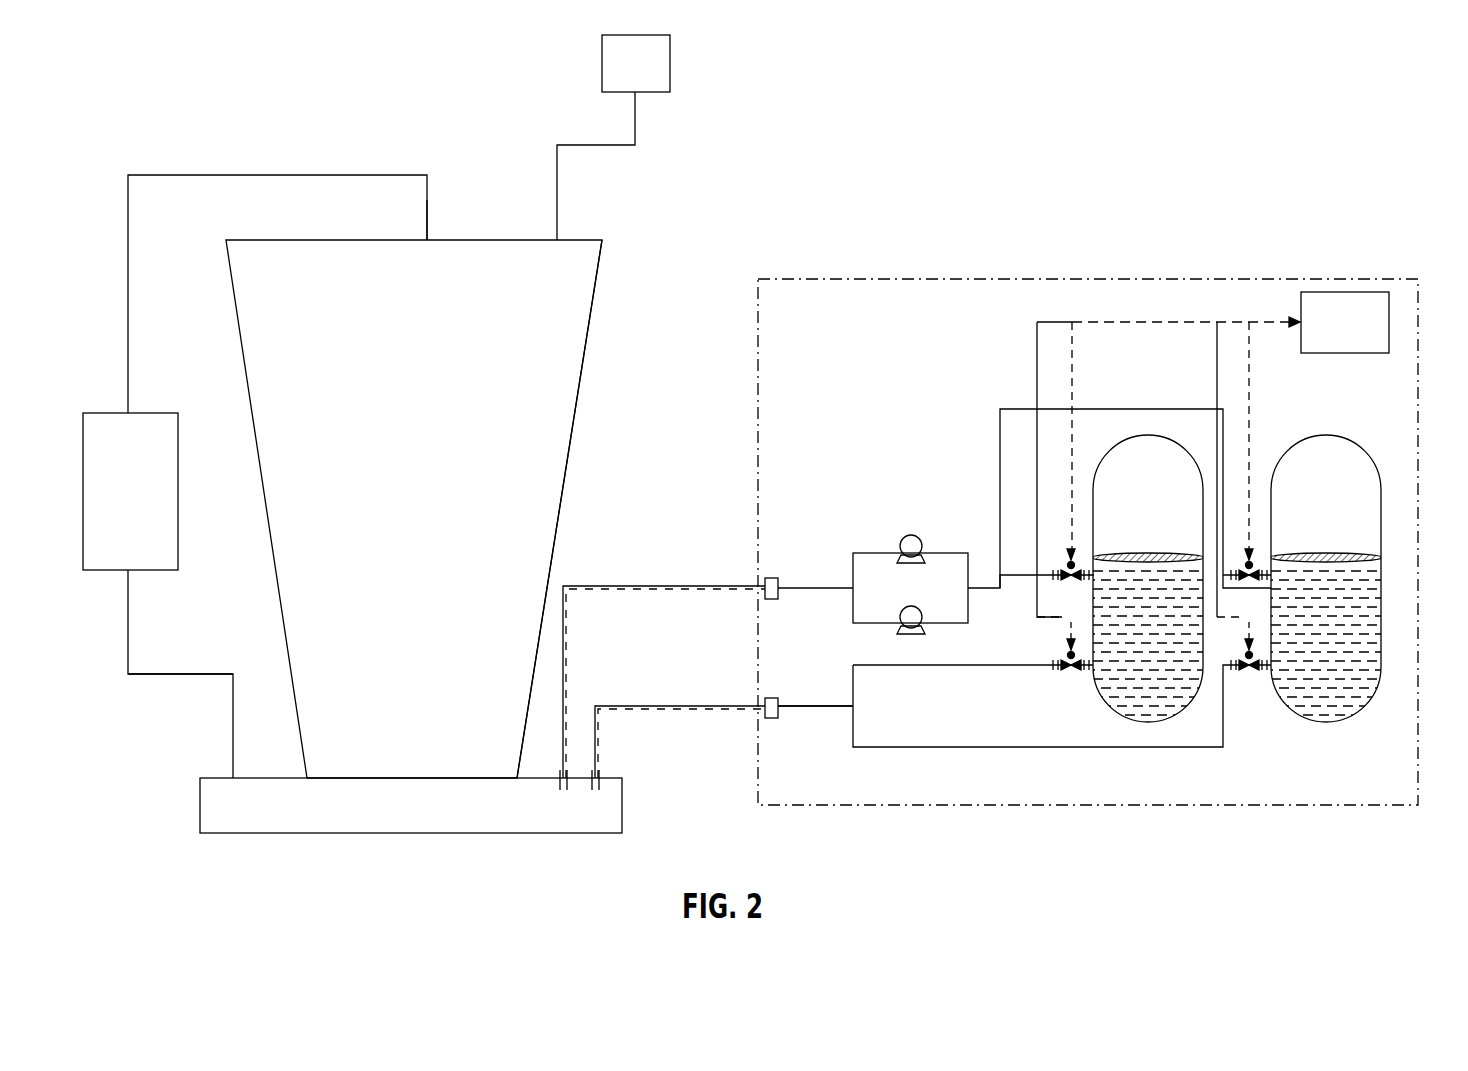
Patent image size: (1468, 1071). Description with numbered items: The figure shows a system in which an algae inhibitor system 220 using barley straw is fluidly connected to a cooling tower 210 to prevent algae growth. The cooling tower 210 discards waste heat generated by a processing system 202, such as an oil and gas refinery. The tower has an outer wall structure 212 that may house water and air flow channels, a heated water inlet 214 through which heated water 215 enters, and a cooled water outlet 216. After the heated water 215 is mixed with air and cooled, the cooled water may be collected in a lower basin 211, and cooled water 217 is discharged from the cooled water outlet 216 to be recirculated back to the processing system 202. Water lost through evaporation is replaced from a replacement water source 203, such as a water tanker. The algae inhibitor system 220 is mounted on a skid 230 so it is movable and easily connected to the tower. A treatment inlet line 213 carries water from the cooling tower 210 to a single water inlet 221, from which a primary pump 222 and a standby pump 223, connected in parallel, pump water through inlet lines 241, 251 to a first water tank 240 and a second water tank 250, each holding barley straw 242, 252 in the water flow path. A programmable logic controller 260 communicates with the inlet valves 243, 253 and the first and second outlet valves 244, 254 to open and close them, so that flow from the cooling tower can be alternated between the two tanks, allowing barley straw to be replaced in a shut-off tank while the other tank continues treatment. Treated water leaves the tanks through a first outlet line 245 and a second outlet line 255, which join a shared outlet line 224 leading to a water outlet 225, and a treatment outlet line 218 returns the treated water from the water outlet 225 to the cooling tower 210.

The processing system 202 is at (108, 504).
The replacement water source 203 is at (614, 80).
The cooling tower 210 is at (391, 520).
The lower basin 211 is at (387, 820).
The outer wall structure 212 is at (590, 327).
The treatment inlet line 213 is at (648, 586).
The heated water inlet 214 is at (428, 239).
The heated water 215 is at (190, 174).
The cooled water outlet 216 is at (232, 777).
The cooled water 217 is at (170, 673).
The treatment outlet line 218 is at (625, 706).
The algae inhibitor system 220 is at (1358, 212).
The water inlet 221 is at (772, 578).
The primary pump 222 is at (903, 540).
The standby pump 223 is at (918, 626).
The shared outlet line 224 is at (826, 707).
The water outlet 225 is at (779, 702).
The skid 230 is at (828, 279).
The first water tank 240 is at (1126, 502).
The inlet line 241 is at (1012, 575).
The barley straw 242 is at (1148, 560).
The inlet valve 243 is at (1067, 585).
The first outlet valve 244 is at (1067, 670).
The first outlet line 245 is at (957, 667).
The second water tank 250 is at (1304, 502).
The inlet line 251 is at (1021, 408).
The barley straw 252 is at (1323, 560).
The inlet valve 253 is at (1249, 563).
The second outlet valve 254 is at (1250, 670).
The second outlet line 255 is at (942, 748).
The programmable logic controller 260 is at (1323, 336).